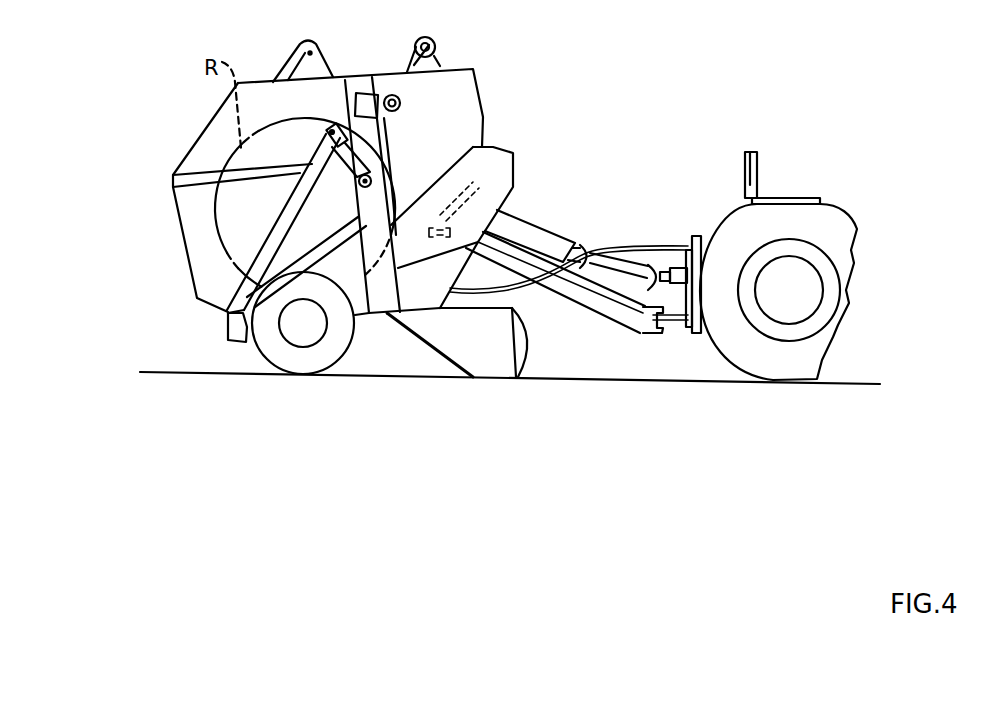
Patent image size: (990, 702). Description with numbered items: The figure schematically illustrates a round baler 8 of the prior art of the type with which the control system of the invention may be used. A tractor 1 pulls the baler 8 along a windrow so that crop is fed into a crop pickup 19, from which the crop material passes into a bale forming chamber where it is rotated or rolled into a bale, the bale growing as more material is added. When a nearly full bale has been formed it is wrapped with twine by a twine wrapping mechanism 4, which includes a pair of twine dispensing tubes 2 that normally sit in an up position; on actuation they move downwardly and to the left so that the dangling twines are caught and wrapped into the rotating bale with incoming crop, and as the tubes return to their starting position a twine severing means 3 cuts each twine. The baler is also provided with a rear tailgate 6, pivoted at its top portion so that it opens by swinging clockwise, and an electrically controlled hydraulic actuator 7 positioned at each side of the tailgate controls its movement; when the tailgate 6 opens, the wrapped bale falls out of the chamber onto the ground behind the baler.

The tractor 1 is at (732, 190).
The twine dispensing tubes 2 is at (477, 188).
The twine severing means 3 is at (448, 238).
The twine wrapping mechanism 4 is at (500, 135).
The tailgate 6 is at (184, 243).
The hydraulic actuator 7 is at (357, 157).
The baler 8 is at (346, 207).
The crop pickup 19 is at (530, 362).